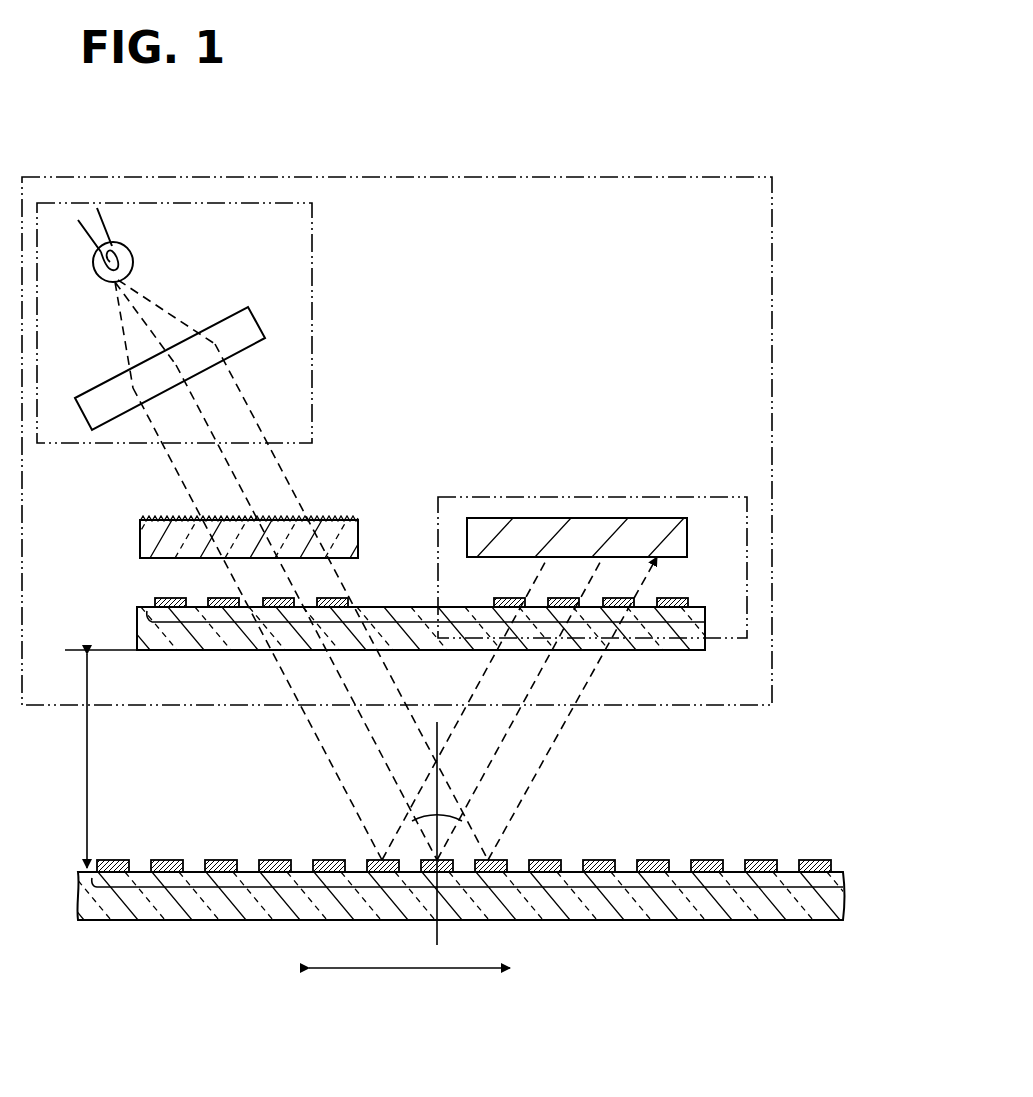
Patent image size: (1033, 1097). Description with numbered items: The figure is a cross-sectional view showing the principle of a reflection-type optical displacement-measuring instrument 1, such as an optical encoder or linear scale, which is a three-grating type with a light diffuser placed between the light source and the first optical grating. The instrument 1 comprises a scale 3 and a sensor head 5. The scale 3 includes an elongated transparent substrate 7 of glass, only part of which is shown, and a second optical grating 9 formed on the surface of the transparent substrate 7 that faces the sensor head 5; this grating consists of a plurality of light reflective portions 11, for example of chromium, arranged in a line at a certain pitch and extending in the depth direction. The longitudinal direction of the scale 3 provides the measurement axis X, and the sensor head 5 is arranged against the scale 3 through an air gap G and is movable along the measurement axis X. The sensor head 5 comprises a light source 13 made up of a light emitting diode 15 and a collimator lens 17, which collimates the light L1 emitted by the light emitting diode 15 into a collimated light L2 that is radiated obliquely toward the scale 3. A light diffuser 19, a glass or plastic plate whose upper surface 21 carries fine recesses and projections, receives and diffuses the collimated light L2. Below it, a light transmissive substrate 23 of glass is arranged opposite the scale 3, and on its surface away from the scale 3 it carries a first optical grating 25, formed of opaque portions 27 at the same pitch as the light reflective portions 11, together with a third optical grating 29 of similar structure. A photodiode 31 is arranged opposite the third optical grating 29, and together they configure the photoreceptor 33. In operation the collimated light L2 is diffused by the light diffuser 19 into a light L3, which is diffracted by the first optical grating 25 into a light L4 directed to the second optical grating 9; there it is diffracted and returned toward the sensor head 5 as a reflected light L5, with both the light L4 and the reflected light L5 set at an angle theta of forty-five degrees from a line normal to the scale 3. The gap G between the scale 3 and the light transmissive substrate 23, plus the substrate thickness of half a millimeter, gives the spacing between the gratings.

The optical displacement-measuring instrument 1 is at (825, 87).
The scale 3 is at (842, 838).
The sensor head 5 is at (773, 342).
The transparent substrate 7 is at (845, 903).
The second optical grating 9 is at (550, 893).
The light reflective portions 11 is at (705, 860).
The light source 13 is at (312, 300).
The light emitting diode 15 is at (133, 253).
The collimator lens 17 is at (243, 355).
The light diffuser 19 is at (140, 538).
The upper surface 21 is at (355, 520).
The light transmissive substrate 23 is at (160, 650).
The first optical grating 25 is at (230, 624).
The opaque portions 27 is at (155, 598).
The third optical grating 29 is at (587, 625).
The photodiode 31 is at (687, 530).
The photoreceptor 33 is at (589, 497).
The light L1 is at (175, 308).
The collimated light L2 is at (292, 488).
The light L3 is at (346, 590).
The light L4 is at (325, 750).
The reflected light L5 is at (553, 745).
The angle theta is at (456, 814).
The gap G is at (87, 758).
The measurement axis X is at (397, 972).